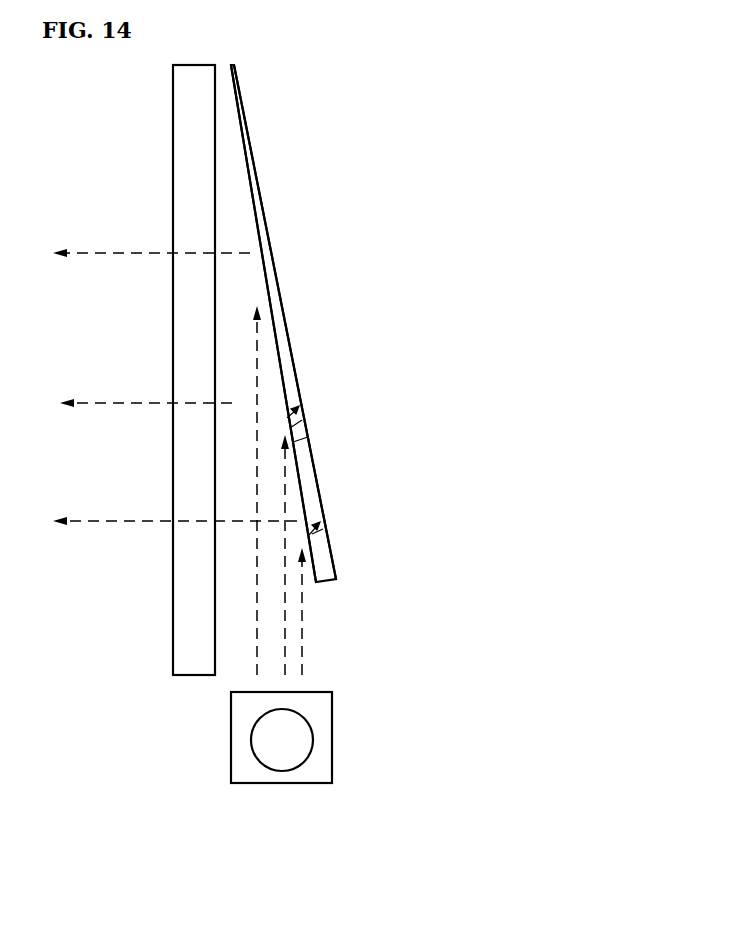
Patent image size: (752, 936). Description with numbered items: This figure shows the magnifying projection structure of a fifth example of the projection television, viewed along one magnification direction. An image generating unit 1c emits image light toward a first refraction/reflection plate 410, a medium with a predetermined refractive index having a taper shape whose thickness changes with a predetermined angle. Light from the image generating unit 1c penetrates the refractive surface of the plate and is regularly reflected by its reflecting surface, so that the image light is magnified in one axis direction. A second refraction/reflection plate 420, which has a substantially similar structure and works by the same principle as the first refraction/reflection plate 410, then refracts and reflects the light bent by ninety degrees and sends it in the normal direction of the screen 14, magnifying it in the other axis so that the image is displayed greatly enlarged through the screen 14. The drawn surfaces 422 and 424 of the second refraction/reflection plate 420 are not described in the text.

The screen 14 is at (188, 132).
The second refraction/reflection plate 420 is at (283, 322).
The first surface of reflective member 422 is at (297, 443).
The second surface of reflective member 424 is at (315, 471).
The first refraction/reflection plate 410 is at (318, 709).
The image generating unit 1c is at (298, 740).